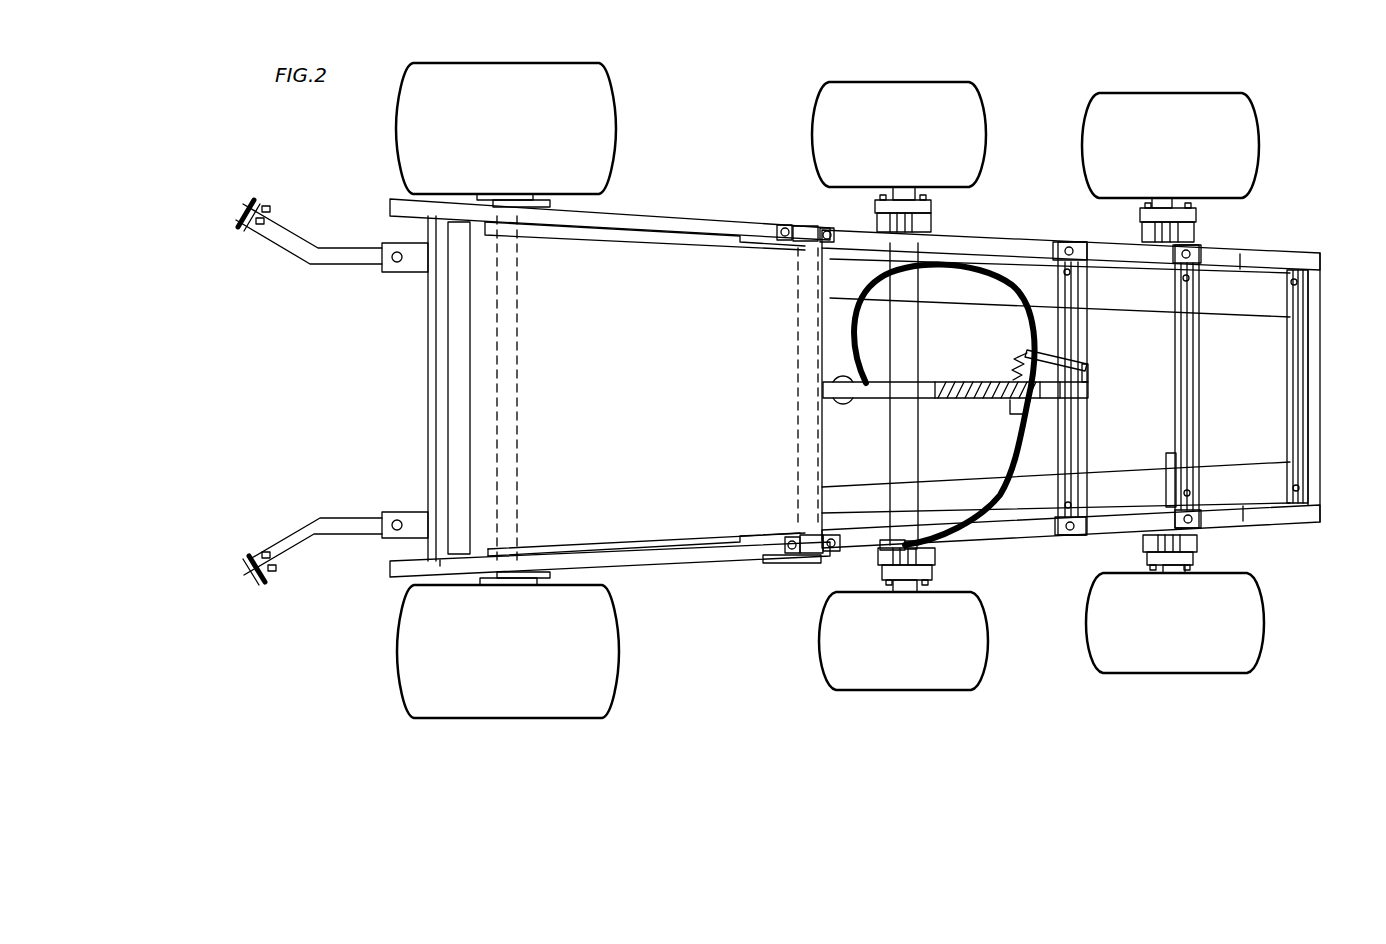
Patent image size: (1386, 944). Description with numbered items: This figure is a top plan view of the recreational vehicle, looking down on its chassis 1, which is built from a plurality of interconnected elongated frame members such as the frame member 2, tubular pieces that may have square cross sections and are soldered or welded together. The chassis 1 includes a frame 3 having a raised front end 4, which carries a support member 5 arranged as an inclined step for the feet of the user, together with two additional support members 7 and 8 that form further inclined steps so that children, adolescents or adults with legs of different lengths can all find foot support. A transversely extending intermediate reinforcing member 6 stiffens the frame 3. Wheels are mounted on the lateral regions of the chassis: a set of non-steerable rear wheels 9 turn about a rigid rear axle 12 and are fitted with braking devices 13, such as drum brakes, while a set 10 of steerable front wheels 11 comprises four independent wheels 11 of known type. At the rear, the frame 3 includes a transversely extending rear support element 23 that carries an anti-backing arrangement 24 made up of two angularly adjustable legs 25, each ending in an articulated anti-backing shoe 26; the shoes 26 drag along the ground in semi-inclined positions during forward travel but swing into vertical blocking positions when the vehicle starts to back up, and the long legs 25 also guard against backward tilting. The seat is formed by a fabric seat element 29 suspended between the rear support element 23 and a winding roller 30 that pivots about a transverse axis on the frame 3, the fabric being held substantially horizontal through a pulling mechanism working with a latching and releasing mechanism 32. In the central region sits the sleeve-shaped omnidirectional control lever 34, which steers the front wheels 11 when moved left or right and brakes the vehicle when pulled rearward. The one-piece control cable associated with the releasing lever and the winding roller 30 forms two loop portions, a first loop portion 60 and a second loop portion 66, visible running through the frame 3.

The chassis 1 is at (1262, 204).
The frame member 2 is at (993, 243).
The frame 3 is at (748, 210).
The raised front end 4 is at (1332, 343).
The support member 5 is at (1300, 425).
The intermediate reinforcing member 6 is at (905, 462).
The support member 7 is at (1190, 427).
The support member 8 is at (1068, 445).
The rear wheel 9 is at (364, 670).
The set of steerable front wheels 10 is at (1029, 698).
The front wheel 11 is at (897, 107).
The rigid rear axle 12 is at (508, 473).
The braking device 13 is at (520, 203).
The rear support element 23 is at (428, 392).
The anti-backing arrangement 24 is at (358, 330).
The angular adjustable leg 25 is at (292, 241).
The anti-backing shoe 26 is at (236, 207).
The fabric seat element 29 is at (637, 262).
The winding roller 30 is at (802, 320).
The latching and releasing mechanism 32 is at (1108, 383).
The omnidirectional control element or lever 34 is at (1092, 362).
The first loop portion 60 is at (1022, 275).
The loop portion 66 is at (1008, 505).